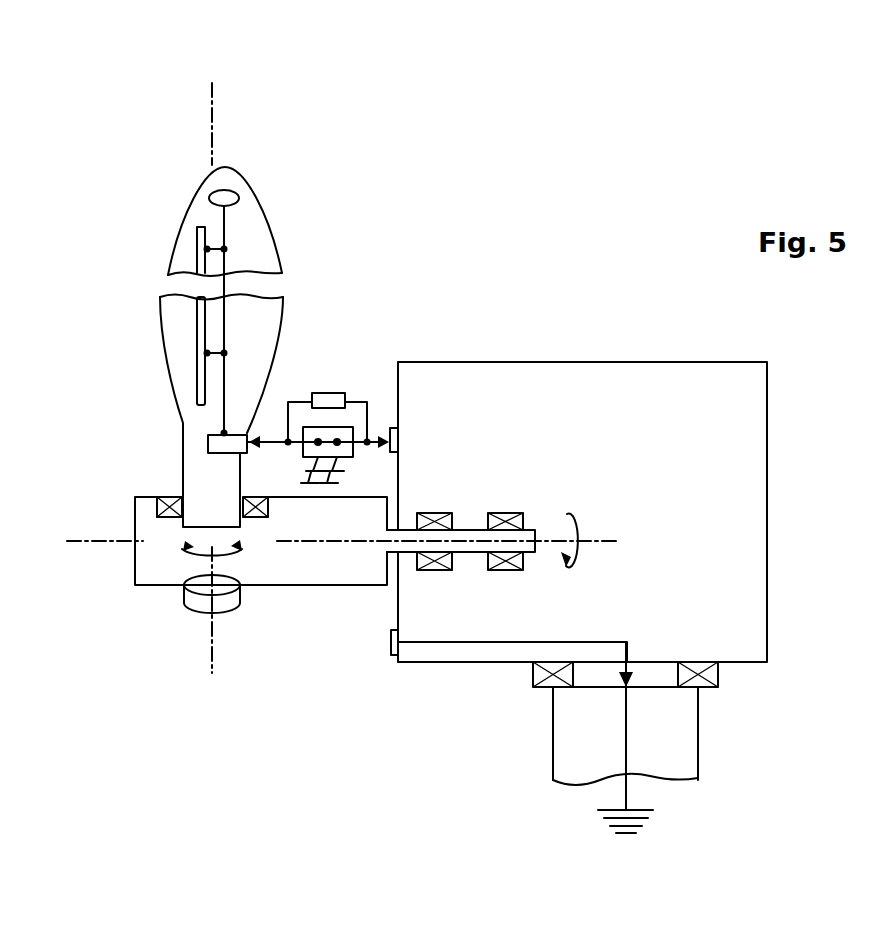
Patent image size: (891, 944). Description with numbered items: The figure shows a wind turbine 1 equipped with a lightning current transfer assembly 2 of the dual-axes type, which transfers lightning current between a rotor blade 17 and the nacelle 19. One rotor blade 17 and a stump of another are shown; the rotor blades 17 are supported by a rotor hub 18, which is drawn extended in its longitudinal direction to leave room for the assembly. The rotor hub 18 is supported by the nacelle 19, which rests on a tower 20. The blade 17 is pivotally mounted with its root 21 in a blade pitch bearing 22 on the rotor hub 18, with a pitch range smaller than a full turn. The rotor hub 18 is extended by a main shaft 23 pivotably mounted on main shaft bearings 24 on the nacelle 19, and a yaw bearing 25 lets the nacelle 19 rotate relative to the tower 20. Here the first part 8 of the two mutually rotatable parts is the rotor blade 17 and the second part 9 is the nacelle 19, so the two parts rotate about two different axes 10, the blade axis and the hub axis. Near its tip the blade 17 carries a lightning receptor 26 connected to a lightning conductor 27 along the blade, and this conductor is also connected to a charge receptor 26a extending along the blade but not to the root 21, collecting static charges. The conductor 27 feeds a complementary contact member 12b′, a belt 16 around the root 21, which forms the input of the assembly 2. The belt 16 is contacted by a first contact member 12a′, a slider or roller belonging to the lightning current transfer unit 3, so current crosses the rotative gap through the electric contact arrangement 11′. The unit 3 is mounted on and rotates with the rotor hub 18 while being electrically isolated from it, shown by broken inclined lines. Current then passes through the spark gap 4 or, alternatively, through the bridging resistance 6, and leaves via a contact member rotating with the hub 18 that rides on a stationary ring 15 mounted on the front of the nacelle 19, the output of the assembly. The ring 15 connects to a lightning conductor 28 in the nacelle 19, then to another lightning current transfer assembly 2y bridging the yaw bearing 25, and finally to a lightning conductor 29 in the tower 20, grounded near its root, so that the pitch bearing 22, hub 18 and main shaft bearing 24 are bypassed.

The wind turbine 1 is at (608, 312).
The lightning current transfer assembly 2 is at (343, 303).
The lightning current transfer assembly bridging the yaw bearing 2y is at (639, 658).
The lightning current transfer unit 3 is at (320, 510).
The spark gap 4 is at (334, 393).
The resistance 6 is at (292, 430).
The first part rotatable relative to the second part 8 is at (260, 347).
The rotor blade 17 is at (252, 227).
The second part rotatable relative to the first part 9 is at (640, 512).
The nacelle 19 is at (752, 430).
The axis of relative rotation 10 is at (212, 100).
The first electric contact arrangement 11′ is at (256, 416).
The first contact member 12a′ is at (255, 451).
The complementary contact member 12b′ is at (158, 426).
The belt 16 is at (213, 442).
The ring 15 is at (399, 432).
The rotor hub 18 is at (290, 577).
The tower 20 is at (687, 755).
The root 21 is at (198, 475).
The blade pitch bearing 22 is at (155, 508).
The main shaft 23 is at (476, 528).
The main shaft bearing 24 is at (523, 517).
The yaw bearing 25 is at (720, 678).
The lightning receptor 26 is at (226, 192).
The charge receptor 26a is at (197, 258).
The lightning conductor 27 is at (273, 262).
The lightning conductor in the nacelle 28 is at (470, 645).
The lightning conductor in the tower 29 is at (622, 758).